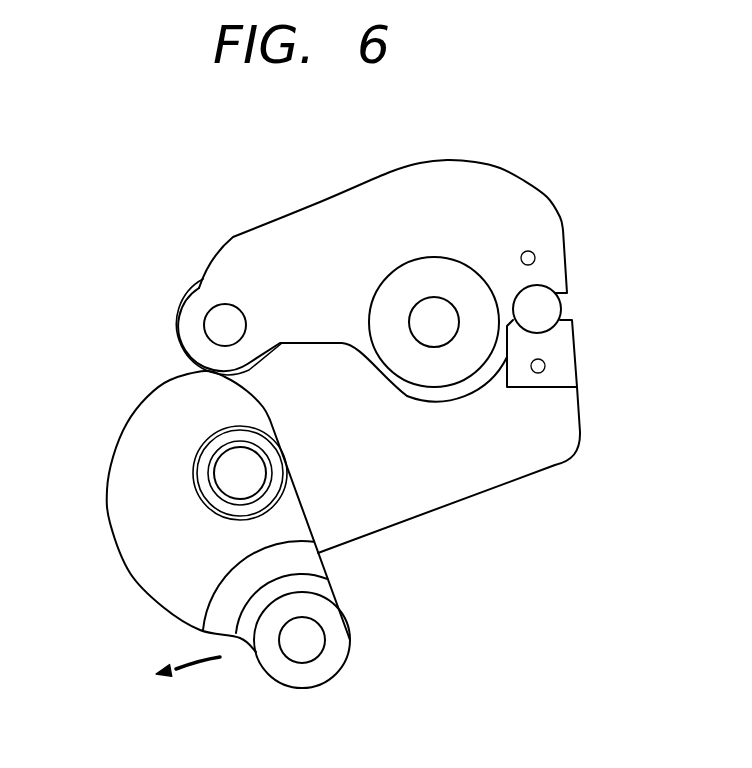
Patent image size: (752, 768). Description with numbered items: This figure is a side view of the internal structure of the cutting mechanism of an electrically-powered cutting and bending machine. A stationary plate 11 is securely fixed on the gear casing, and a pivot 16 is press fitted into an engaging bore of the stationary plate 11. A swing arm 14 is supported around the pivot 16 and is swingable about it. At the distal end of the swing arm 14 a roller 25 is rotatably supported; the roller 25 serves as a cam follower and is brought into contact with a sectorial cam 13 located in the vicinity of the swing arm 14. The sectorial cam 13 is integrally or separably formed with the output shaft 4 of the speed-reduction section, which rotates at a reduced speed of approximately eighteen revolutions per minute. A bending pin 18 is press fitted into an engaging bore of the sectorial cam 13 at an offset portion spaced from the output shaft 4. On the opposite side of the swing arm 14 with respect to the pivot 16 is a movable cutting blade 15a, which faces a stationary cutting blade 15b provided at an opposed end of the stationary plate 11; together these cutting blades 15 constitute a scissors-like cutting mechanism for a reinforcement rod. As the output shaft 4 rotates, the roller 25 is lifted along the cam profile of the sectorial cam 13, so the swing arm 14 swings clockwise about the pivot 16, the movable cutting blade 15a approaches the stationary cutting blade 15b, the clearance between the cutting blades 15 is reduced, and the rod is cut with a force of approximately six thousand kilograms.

The output shaft 4 is at (227, 462).
The stationary plate 11 is at (432, 485).
The sectorial cam 13 is at (123, 540).
The swing arm 14 is at (357, 203).
The cutting blades 15 is at (615, 319).
The movable cutting blade 15a is at (570, 298).
The stationary cutting blade 15b is at (567, 337).
The pivot 16 is at (447, 312).
The bending pin 18 is at (317, 635).
The roller 25 is at (178, 322).